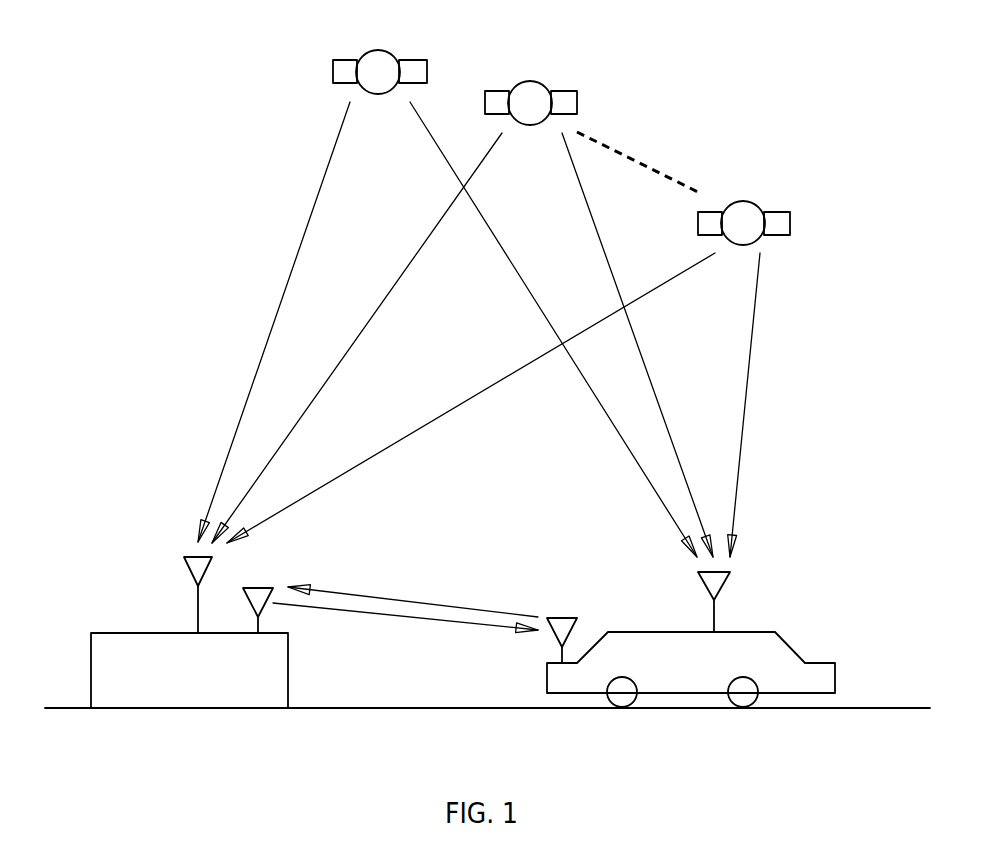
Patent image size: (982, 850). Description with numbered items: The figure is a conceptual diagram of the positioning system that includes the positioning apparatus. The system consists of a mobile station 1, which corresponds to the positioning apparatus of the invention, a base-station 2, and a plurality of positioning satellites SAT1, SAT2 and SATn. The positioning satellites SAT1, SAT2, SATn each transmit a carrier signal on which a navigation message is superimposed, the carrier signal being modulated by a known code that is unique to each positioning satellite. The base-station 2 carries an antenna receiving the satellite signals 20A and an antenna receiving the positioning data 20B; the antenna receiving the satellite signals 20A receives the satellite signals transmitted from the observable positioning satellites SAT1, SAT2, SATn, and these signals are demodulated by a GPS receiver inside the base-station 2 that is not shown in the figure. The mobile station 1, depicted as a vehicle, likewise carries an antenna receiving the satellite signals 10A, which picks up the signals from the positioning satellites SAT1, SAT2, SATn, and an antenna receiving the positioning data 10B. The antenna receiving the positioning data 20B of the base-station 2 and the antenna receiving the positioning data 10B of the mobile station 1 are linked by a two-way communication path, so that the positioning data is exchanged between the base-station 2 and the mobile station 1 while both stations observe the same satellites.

The mobile station 1 is at (800, 630).
The base-station 2 is at (137, 630).
The antenna receiving the satellite signals 10A is at (730, 580).
The antenna receiving the positioning data 10B is at (574, 616).
The antenna receiving the satellite signals 20A is at (184, 568).
The antenna receiving the positioning data 20B is at (268, 587).
The positioning satellite SAT1 is at (397, 50).
The positioning satellite SAT2 is at (567, 68).
The positioning satellite SATn is at (780, 187).